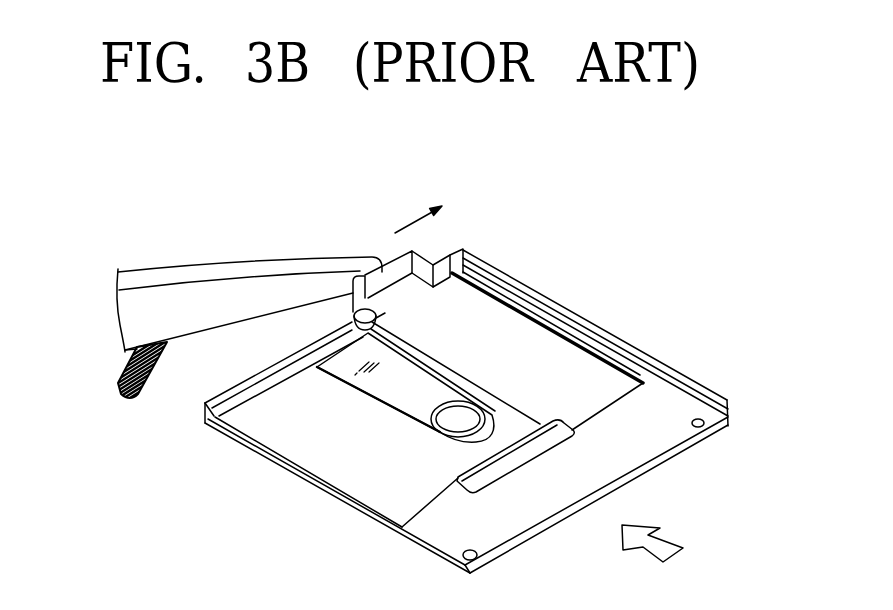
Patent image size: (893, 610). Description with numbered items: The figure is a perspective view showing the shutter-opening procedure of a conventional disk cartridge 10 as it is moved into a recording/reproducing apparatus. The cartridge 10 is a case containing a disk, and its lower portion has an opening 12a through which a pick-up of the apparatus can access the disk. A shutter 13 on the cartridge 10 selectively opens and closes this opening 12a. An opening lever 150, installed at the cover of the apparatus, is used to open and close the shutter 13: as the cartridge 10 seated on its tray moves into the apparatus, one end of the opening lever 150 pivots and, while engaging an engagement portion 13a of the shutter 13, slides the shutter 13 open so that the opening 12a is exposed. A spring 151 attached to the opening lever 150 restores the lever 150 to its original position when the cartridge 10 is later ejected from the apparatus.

The disk cartridge 10 is at (638, 328).
The opening 12a is at (370, 377).
The shutter 13 is at (478, 311).
The engagement portion 13a is at (355, 325).
The opening lever 150 is at (202, 275).
The spring 151 is at (138, 396).